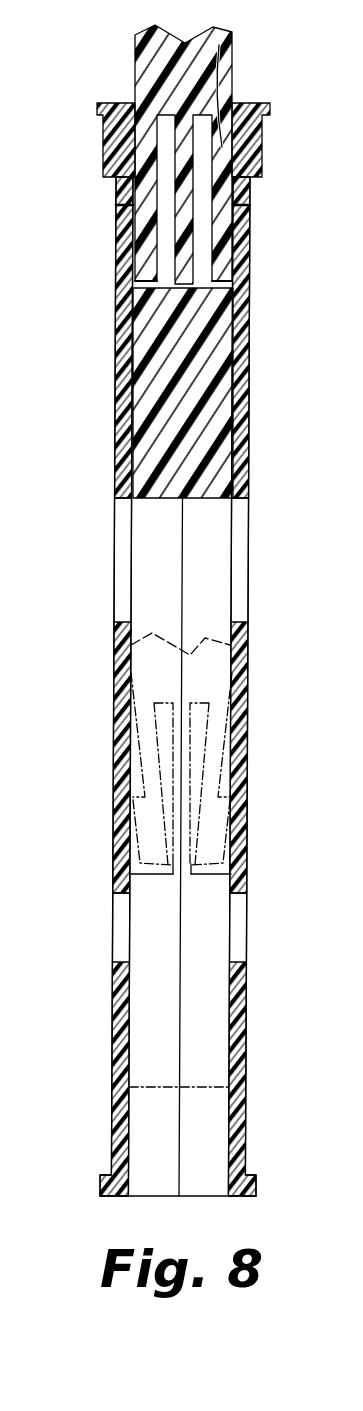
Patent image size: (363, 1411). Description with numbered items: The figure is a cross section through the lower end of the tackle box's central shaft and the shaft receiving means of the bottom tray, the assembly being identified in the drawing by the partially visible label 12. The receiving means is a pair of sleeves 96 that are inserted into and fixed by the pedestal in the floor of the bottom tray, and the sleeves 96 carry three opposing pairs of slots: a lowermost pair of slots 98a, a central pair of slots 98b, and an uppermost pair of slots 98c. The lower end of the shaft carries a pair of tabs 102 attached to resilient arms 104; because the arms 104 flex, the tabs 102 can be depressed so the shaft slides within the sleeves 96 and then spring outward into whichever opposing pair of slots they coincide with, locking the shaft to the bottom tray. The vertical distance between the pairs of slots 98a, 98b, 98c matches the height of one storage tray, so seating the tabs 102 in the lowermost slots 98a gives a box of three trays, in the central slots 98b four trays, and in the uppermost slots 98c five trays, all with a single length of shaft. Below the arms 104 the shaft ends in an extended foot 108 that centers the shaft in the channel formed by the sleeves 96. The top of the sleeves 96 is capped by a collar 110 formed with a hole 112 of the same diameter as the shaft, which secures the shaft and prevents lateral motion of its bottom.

The sleeves 96 is at (122, 395).
The lowermost pair of slots 98a is at (251, 222).
The central pair of slots 98b is at (251, 578).
The uppermost pair of slots 98c is at (251, 920).
The tabs 102 is at (251, 270).
The resilient arms 104 is at (233, 33).
The extended foot 108 is at (213, 447).
The collar 110 is at (257, 103).
The hole 112 is at (238, 93).
The syringe 12 is at (353, 462).